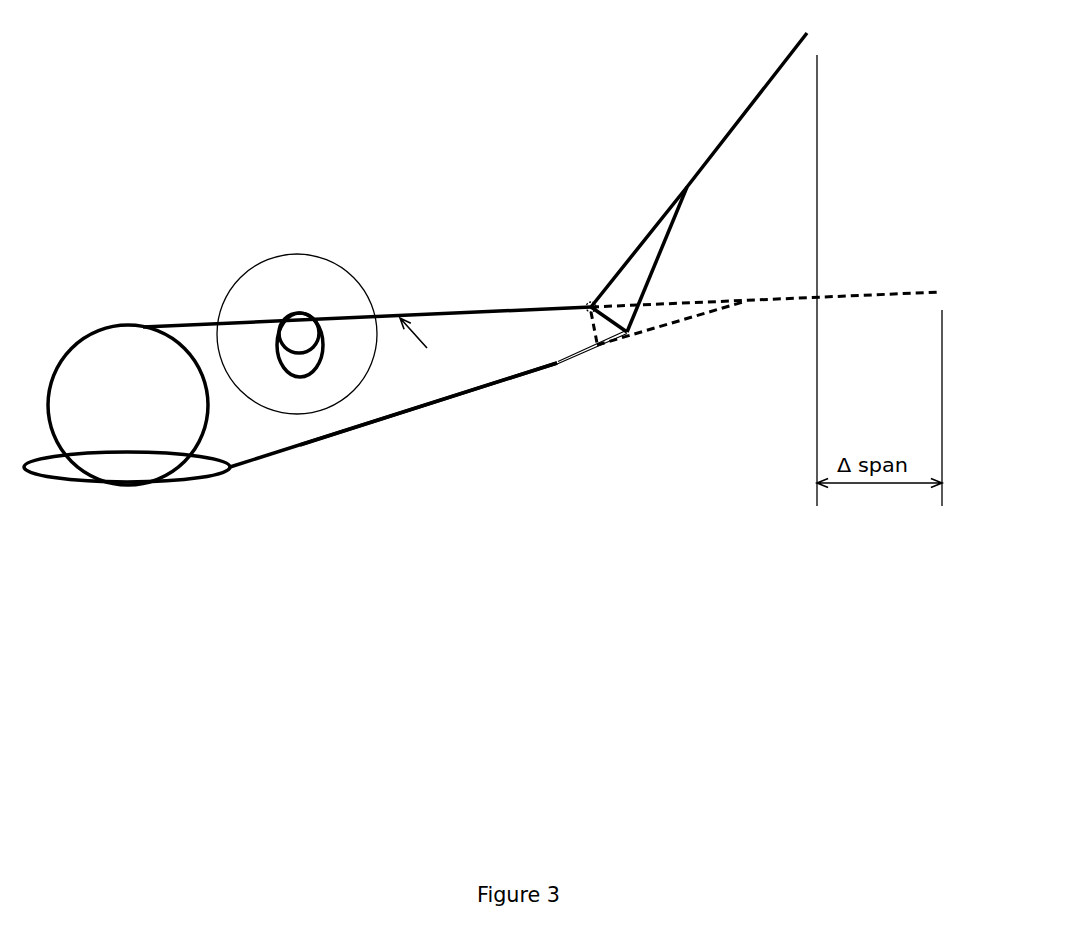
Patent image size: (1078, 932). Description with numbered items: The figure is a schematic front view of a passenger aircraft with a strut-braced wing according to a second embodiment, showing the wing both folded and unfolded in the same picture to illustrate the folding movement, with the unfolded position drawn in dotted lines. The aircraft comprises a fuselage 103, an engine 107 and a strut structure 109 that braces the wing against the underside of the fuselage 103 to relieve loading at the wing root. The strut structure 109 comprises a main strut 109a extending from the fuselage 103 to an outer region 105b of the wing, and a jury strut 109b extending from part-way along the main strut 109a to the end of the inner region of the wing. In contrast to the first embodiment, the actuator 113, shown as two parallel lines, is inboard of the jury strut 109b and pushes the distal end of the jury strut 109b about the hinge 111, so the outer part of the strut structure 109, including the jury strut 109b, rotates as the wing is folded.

The fuselage 103 is at (147, 415).
The outer region of the wing 105b is at (734, 102).
The engine 107 is at (249, 296).
The strut structure 109 is at (415, 427).
The main strut 109a is at (469, 406).
The jury strut 109b is at (582, 334).
The hinge 111 is at (577, 295).
The actuator 113 is at (594, 360).